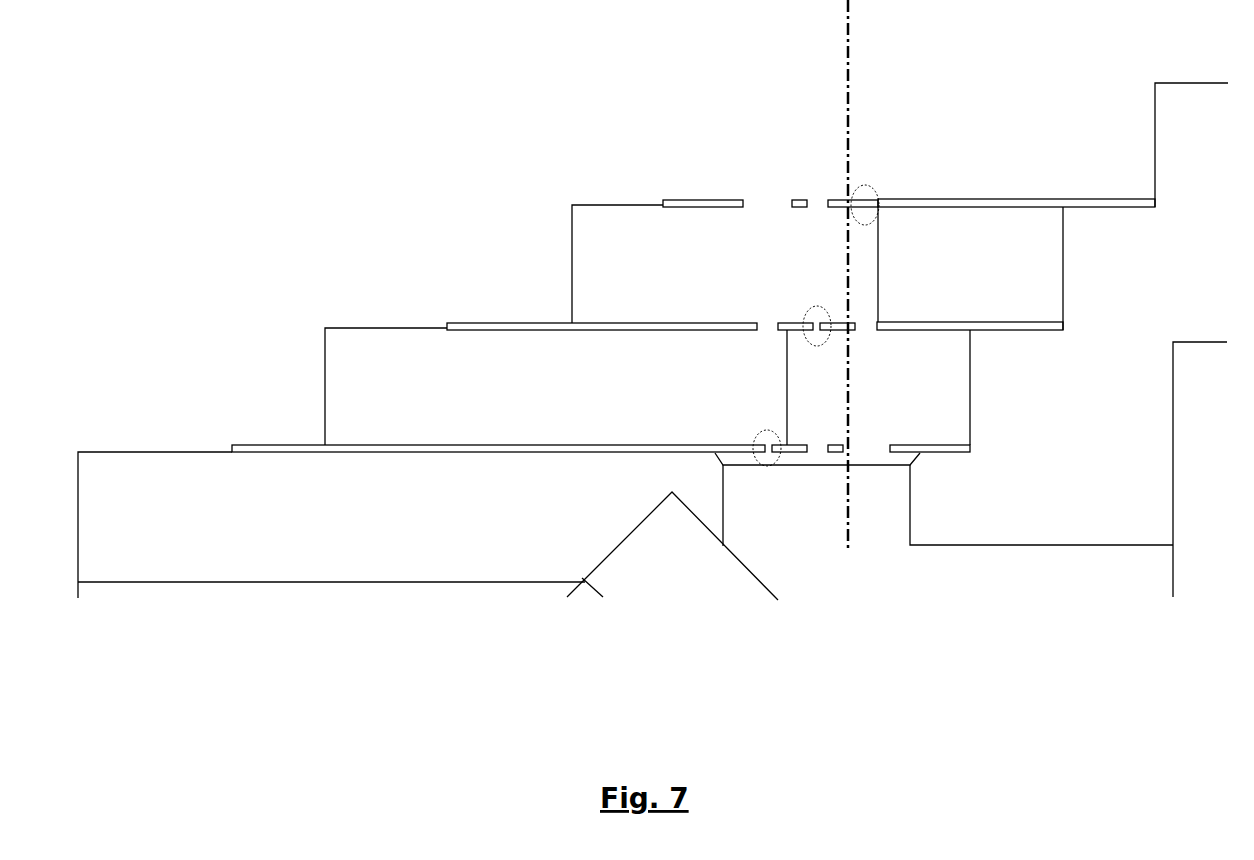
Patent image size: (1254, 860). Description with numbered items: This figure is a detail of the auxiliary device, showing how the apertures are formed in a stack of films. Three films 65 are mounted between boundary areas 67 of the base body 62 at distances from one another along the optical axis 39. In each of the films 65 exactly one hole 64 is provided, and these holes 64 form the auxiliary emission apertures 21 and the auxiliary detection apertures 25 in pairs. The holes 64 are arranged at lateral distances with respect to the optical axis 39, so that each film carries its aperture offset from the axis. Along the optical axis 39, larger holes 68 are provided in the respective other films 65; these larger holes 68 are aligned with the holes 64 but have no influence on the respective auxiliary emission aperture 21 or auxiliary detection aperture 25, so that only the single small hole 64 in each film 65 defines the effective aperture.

The optical axis 39 is at (845, 48).
The films 65 is at (678, 203).
The boundary areas 67 is at (1108, 207).
The larger holes 68 is at (768, 328).
The auxiliary emission apertures 21 is at (855, 385).
The auxiliary detection apertures 25 is at (855, 385).
The holes 64 is at (862, 210).
The base body 62 is at (1191, 145).